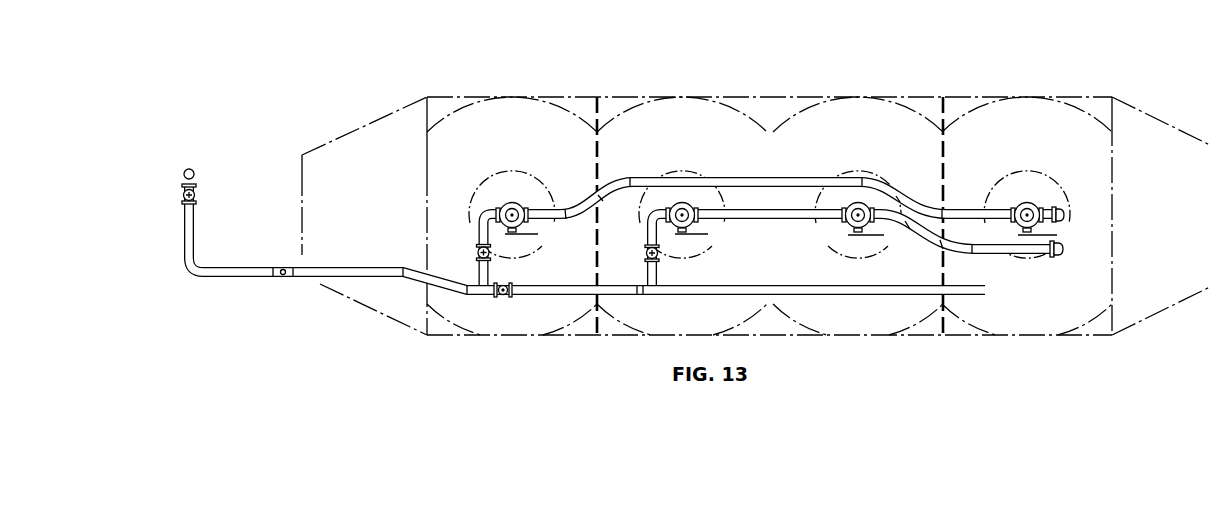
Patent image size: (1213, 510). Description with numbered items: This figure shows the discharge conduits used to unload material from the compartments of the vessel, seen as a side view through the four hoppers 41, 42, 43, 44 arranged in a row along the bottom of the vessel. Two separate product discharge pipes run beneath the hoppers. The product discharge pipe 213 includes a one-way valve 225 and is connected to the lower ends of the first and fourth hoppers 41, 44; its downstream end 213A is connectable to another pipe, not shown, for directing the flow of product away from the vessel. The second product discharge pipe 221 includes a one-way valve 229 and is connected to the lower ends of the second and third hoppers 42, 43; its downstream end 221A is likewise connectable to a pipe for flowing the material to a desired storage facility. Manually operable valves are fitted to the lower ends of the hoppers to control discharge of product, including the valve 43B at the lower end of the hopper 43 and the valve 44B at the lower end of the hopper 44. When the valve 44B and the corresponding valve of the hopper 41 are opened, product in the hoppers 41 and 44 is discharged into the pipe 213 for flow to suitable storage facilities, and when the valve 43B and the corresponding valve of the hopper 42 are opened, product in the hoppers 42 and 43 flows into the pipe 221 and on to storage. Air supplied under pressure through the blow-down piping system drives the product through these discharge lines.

The hopper 41 is at (512, 173).
The hopper 42 is at (688, 173).
The hopper 43 is at (862, 175).
The hopper 44 is at (1032, 173).
The manually operable valve 43B is at (855, 235).
The manually operable valve 44B is at (1028, 236).
The product discharge pipe 213 is at (765, 177).
The downstream end of pipe 213 213A is at (1060, 205).
The product discharge pipe 221 is at (660, 272).
The downstream end of pipe 221 221A is at (1063, 253).
The one-way valve 225 is at (485, 243).
The one-way valve 229 is at (648, 258).